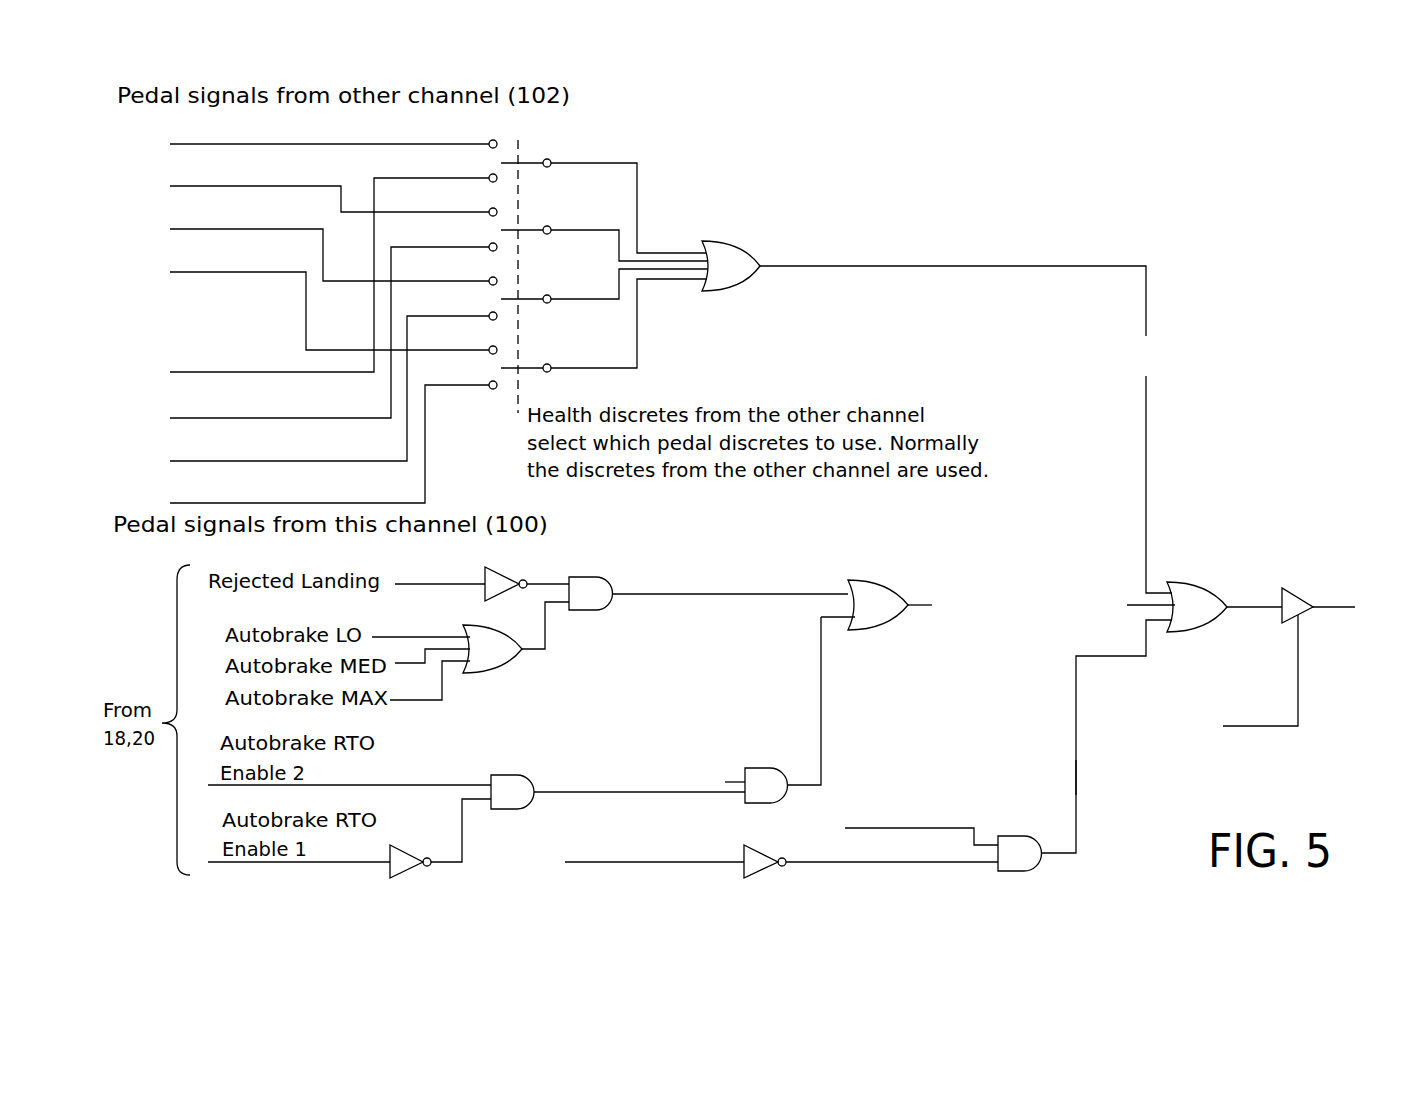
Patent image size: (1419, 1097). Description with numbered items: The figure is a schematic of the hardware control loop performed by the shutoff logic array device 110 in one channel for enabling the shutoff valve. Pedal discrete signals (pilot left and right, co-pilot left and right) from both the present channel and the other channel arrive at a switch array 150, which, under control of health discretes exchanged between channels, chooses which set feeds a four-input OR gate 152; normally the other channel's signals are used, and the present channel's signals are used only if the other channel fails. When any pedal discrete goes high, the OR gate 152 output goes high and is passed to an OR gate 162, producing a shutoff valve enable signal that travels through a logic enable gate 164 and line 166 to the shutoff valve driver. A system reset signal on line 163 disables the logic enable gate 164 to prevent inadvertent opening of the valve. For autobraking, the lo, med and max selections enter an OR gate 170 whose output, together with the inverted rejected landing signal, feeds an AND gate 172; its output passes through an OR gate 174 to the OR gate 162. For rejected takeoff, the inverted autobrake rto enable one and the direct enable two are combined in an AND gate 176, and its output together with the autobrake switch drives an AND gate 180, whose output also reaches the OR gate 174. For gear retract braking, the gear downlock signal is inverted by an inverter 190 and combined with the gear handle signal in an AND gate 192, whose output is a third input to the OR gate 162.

The shutoff logic array device 110 is at (124, 371).
The switch array 150 is at (527, 137).
The four-input OR gate 152 is at (737, 243).
The OR gate 162 is at (1197, 578).
The line 163 is at (1270, 728).
The logic enable gate 164 is at (1292, 588).
The line 166 is at (1350, 610).
The OR gate 170 is at (492, 672).
The AND gate 172 is at (590, 577).
The OR gate 174 is at (887, 583).
The AND gate 176 is at (515, 775).
The AND gate 180 is at (765, 768).
The inverter 190 is at (758, 868).
The AND gate 192 is at (1005, 836).